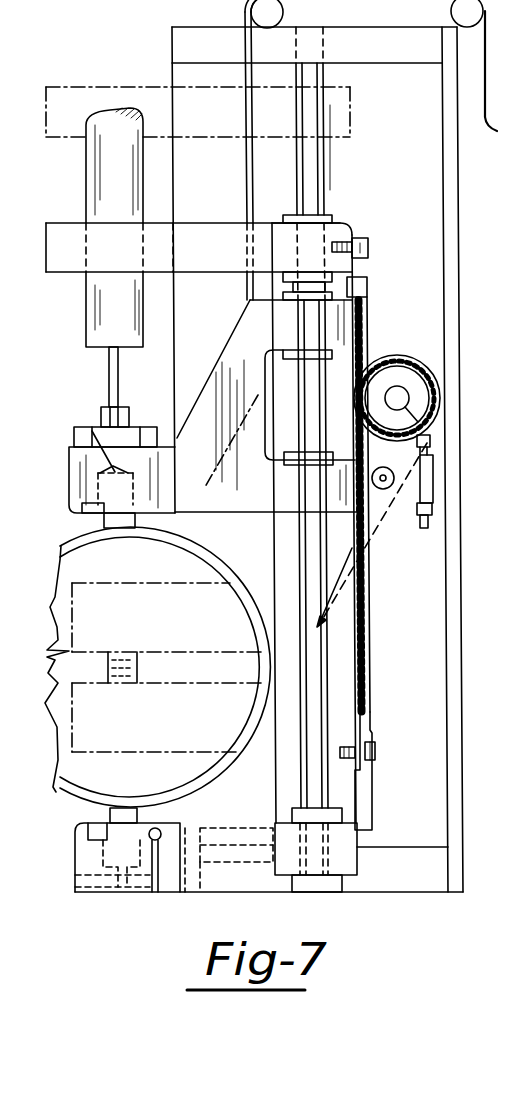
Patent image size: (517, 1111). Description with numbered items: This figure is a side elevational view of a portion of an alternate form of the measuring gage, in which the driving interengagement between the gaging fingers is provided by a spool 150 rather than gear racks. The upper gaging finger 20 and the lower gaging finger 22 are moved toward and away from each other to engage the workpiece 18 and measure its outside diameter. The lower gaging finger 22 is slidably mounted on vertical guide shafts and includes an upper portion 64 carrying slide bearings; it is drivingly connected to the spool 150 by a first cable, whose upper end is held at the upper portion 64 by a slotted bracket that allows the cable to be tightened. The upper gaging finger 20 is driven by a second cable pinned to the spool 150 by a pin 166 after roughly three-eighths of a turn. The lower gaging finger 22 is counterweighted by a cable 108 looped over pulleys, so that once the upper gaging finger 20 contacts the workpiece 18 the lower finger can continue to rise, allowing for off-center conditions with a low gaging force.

The workpiece 18 is at (76, 533).
The upper gaging finger 20 is at (66, 443).
The lower gaging finger 22 is at (66, 876).
The upper portion 64 is at (345, 222).
The cable 108 is at (243, 170).
The spool 150 is at (387, 378).
The pin 166 is at (437, 385).